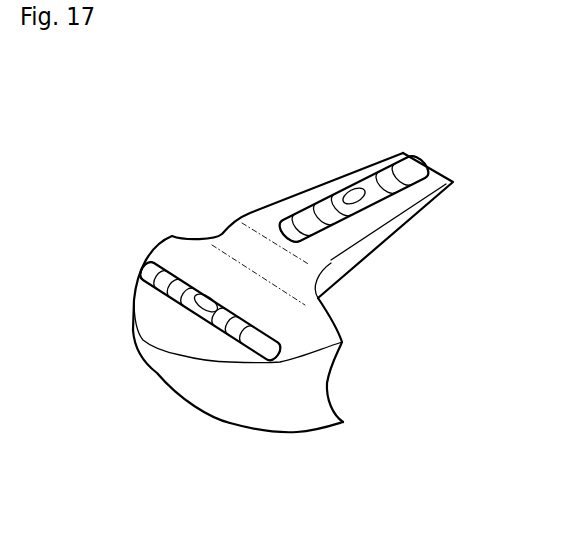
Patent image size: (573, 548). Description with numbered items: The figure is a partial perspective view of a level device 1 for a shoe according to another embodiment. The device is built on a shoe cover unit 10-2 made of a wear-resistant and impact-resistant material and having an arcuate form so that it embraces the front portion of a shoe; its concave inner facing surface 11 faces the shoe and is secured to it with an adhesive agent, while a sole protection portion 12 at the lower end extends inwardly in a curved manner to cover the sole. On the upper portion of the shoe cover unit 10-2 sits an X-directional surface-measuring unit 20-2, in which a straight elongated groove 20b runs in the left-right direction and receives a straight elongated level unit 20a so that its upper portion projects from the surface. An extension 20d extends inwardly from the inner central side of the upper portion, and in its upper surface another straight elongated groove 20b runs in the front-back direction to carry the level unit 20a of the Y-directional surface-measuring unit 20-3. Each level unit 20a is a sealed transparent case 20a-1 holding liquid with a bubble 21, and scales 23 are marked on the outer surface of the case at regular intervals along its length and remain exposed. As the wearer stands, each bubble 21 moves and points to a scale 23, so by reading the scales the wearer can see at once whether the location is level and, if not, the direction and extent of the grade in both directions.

The level device 1 is at (153, 417).
The shoe cover unit 10-2 is at (243, 410).
The inner facing surface 11 is at (326, 381).
The sole protection portion 12 is at (297, 433).
The X-directional surface-measuring unit 20-2 is at (151, 298).
The Y-directional surface-measuring unit 20-3 is at (343, 227).
The level unit 20a is at (208, 173).
The transparent case 20a-1 is at (155, 264).
The bubble 21 is at (213, 300).
The scale 23 is at (203, 300).
The straight elongated groove 20b is at (203, 300).
The extension 20d is at (446, 178).